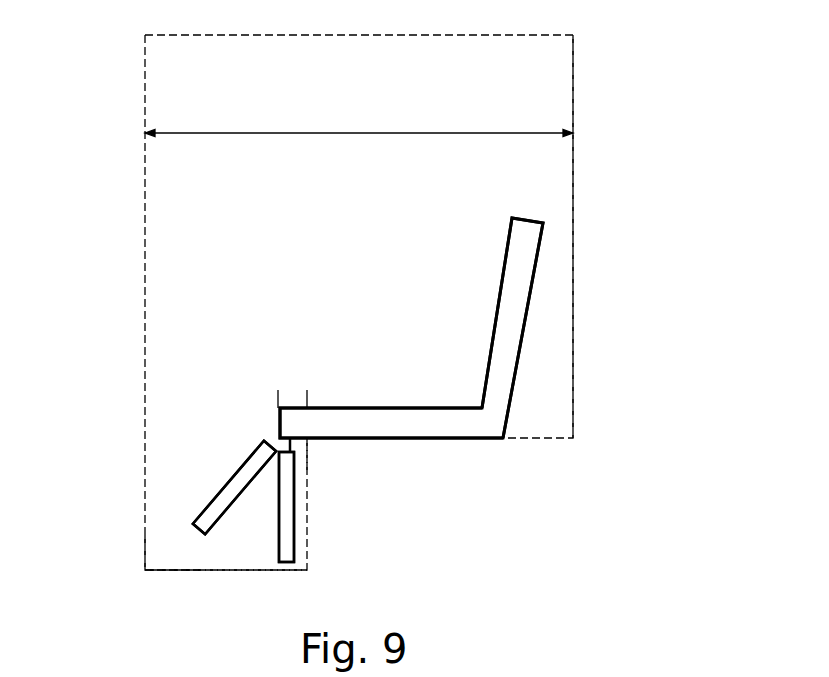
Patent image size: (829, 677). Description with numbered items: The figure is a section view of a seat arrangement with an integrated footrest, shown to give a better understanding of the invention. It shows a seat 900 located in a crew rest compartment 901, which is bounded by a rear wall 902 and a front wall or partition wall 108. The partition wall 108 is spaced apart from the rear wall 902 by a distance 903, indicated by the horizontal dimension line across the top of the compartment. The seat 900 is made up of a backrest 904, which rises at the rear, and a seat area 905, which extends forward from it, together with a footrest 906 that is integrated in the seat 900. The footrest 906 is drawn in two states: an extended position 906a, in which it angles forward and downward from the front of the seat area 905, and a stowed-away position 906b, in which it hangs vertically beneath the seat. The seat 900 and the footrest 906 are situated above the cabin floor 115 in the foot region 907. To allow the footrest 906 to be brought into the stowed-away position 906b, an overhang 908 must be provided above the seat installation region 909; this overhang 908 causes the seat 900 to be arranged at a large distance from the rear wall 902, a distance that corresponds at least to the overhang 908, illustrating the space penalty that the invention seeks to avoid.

The seat 900 is at (422, 317).
The crew rest compartment 901 is at (588, 65).
The rear wall 902 is at (573, 210).
The distance 903 is at (328, 133).
The backrest 904 is at (527, 325).
The seat area 905 is at (333, 418).
The footrest 906 is at (243, 448).
The extended position 906a is at (228, 492).
The stowed-away position 906b is at (290, 520).
The foot region 907 is at (170, 532).
The overhang 908 is at (290, 392).
The seat installation region 909 is at (327, 455).
The partition wall 108 is at (143, 355).
The cabin floor 115 is at (240, 570).